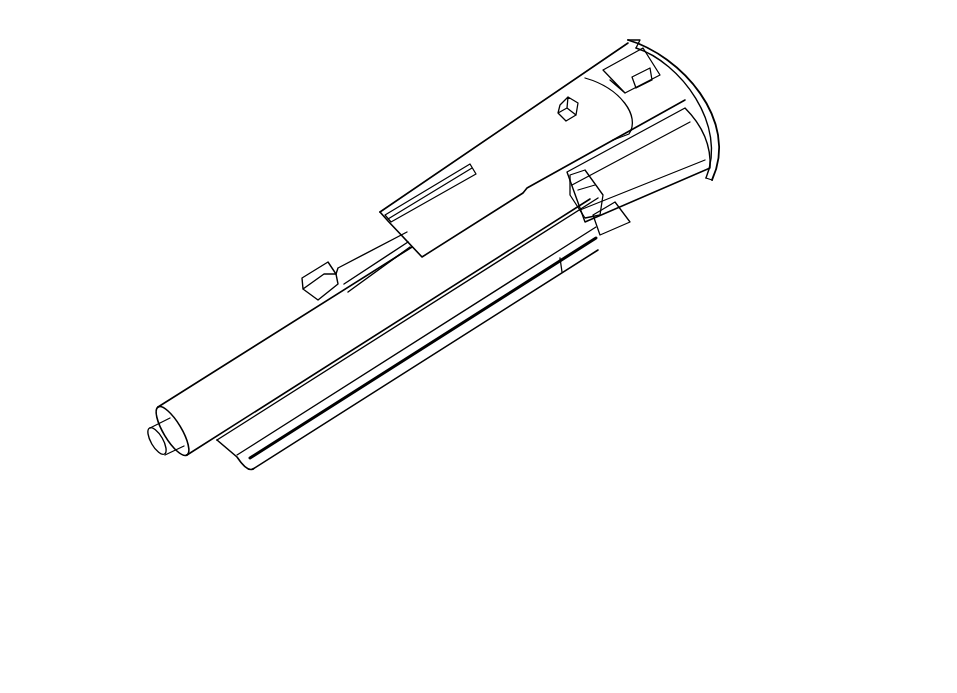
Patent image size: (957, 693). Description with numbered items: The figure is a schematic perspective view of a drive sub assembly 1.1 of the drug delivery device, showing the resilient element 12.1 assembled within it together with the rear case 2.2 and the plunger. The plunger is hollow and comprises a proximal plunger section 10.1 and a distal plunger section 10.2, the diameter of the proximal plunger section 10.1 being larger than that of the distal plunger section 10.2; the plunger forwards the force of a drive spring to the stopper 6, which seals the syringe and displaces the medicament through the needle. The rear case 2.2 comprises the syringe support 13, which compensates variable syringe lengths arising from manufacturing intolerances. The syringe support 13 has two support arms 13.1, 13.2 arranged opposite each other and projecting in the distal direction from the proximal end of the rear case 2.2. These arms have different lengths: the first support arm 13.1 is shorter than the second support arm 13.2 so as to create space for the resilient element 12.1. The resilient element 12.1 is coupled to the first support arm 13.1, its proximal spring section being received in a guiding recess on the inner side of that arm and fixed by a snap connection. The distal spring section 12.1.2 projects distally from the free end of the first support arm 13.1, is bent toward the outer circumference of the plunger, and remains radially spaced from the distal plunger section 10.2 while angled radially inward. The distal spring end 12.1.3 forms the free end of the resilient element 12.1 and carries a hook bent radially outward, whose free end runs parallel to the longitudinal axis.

The drive sub assembly 1.1 is at (442, 98).
The syringe support 13 is at (487, 118).
The first support arm 13.1 is at (508, 143).
The second support arm 13.2 is at (445, 340).
The rear case 2.2 is at (717, 147).
The distal plunger section 10.2 is at (245, 365).
The proximal plunger section 10.1 is at (653, 172).
The stopper 6 is at (160, 425).
The resilient element 12.1 is at (315, 221).
The distal spring section 12.1.2 is at (372, 245).
The distal spring end 12.1.3 is at (320, 280).